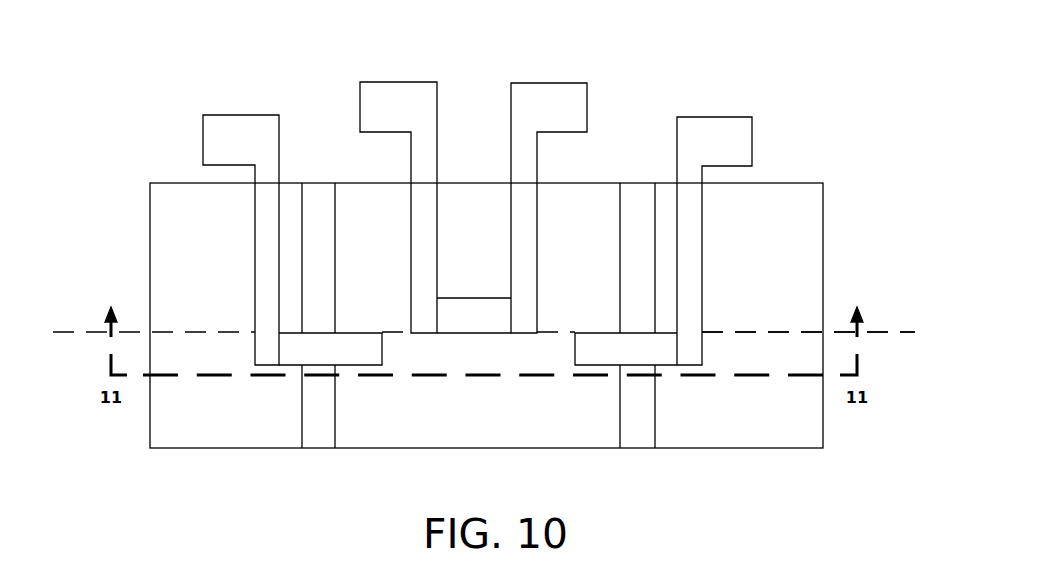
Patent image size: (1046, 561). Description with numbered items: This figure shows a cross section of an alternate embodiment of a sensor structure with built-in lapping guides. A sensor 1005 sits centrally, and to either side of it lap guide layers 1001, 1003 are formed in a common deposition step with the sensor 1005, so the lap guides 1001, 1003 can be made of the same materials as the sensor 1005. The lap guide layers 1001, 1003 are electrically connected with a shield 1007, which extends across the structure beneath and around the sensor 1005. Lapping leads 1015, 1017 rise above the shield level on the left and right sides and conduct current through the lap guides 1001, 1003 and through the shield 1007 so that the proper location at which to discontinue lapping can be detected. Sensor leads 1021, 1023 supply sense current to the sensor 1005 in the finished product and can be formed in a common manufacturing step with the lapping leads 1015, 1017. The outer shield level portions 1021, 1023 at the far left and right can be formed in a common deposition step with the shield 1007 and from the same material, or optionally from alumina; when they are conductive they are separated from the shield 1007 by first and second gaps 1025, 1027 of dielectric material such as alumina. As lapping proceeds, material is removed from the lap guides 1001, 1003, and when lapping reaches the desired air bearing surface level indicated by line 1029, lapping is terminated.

The lap guide layer 1001 is at (368, 348).
The lap guide layer 1003 is at (587, 348).
The sensor 1005 is at (487, 325).
The shield 1007 is at (385, 223).
The lapping lead 1015 is at (242, 140).
The lapping lead 1017 is at (715, 140).
The sensor lead / outer shield level portion 1021 is at (395, 108).
The sensor lead / outer shield level portion 1023 is at (557, 108).
The first gap 1025 is at (318, 192).
The second gap 1027 is at (638, 207).
The line indicating ABS level 1029 is at (890, 333).